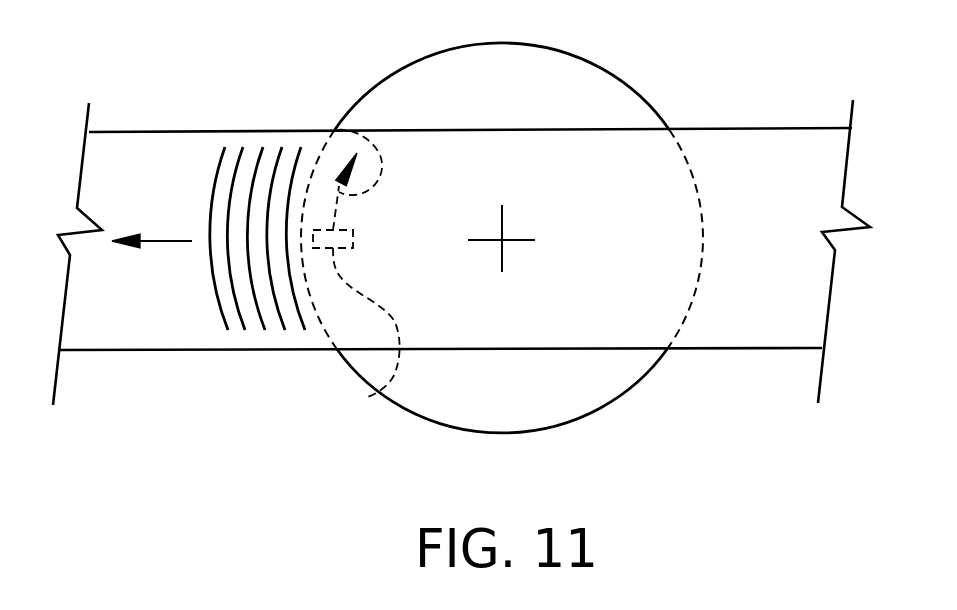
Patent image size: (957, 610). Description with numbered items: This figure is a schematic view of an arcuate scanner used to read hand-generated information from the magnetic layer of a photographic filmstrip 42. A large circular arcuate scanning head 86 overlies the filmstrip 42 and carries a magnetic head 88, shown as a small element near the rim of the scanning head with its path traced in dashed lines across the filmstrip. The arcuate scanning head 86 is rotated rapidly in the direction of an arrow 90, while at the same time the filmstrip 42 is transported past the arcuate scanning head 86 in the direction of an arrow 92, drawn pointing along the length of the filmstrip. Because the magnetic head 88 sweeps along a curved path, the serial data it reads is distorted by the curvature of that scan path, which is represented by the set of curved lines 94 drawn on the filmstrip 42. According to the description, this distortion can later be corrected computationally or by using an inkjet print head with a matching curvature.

The filmstrip 42 is at (782, 203).
The arcuate scanning head 86 is at (512, 98).
The magnetic head 88 is at (367, 397).
The arrow 90 is at (340, 127).
The arrow 92 is at (160, 242).
The curved lines 94 is at (207, 320).